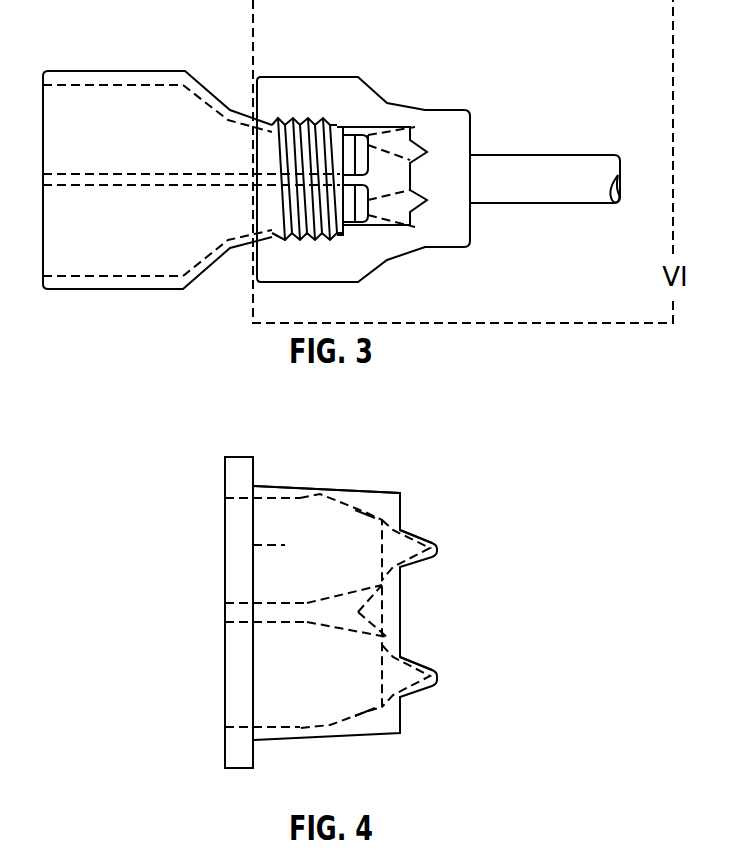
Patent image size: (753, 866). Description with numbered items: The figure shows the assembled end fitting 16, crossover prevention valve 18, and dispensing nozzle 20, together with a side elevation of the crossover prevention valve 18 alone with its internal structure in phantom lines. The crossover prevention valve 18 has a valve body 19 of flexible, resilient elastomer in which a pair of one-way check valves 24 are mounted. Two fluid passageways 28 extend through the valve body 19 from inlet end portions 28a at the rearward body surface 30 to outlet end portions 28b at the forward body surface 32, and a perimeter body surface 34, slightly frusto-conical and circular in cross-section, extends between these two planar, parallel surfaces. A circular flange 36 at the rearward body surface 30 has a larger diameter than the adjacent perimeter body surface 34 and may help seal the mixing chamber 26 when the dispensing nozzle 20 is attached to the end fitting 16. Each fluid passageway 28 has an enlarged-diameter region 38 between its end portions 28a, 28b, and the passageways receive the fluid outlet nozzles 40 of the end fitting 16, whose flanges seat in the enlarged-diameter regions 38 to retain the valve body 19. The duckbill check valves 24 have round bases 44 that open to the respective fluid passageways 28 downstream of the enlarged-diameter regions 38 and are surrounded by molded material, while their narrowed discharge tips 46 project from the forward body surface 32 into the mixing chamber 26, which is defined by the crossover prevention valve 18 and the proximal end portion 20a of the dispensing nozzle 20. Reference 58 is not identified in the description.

In FIG. 3, the end fitting 16 is at (185, 71).
In FIG. 3, the coupling nut 58 is at (357, 77).
In FIG. 3, the fluid outlet nozzle 40 is at (358, 150).
In FIG. 3, the valve body 19 is at (403, 135).
In FIG. 3, the dispensing nozzle 20 is at (518, 155).
In FIG. 3, the proximal end portion of dispensing nozzle 20a is at (612, 155).
In FIG. 3, the mixing chamber 26 is at (392, 163).
In FIG. 4, the crossover prevention valve 18 is at (343, 590).
In FIG. 4, the circular flange 36 is at (238, 462).
In FIG. 4, the perimeter body surface 34 is at (314, 478).
In FIG. 4, the outlet end portion of fluid passageway 28b is at (368, 503).
In FIG. 4, the discharge tip 46 is at (433, 543).
In FIG. 4, the forward body surface 32 is at (410, 597).
In FIG. 4, the enlarged-diameter region 38 is at (294, 505).
In FIG. 4, the fluid passageway 28 is at (285, 538).
In FIG. 4, the inlet end portion of fluid passageway 28a is at (213, 580).
In FIG. 4, the rearward body surface 30 is at (213, 613).
In FIG. 4, the one-way check valve 24 is at (382, 542).
In FIG. 4, the round base 44 is at (347, 611).